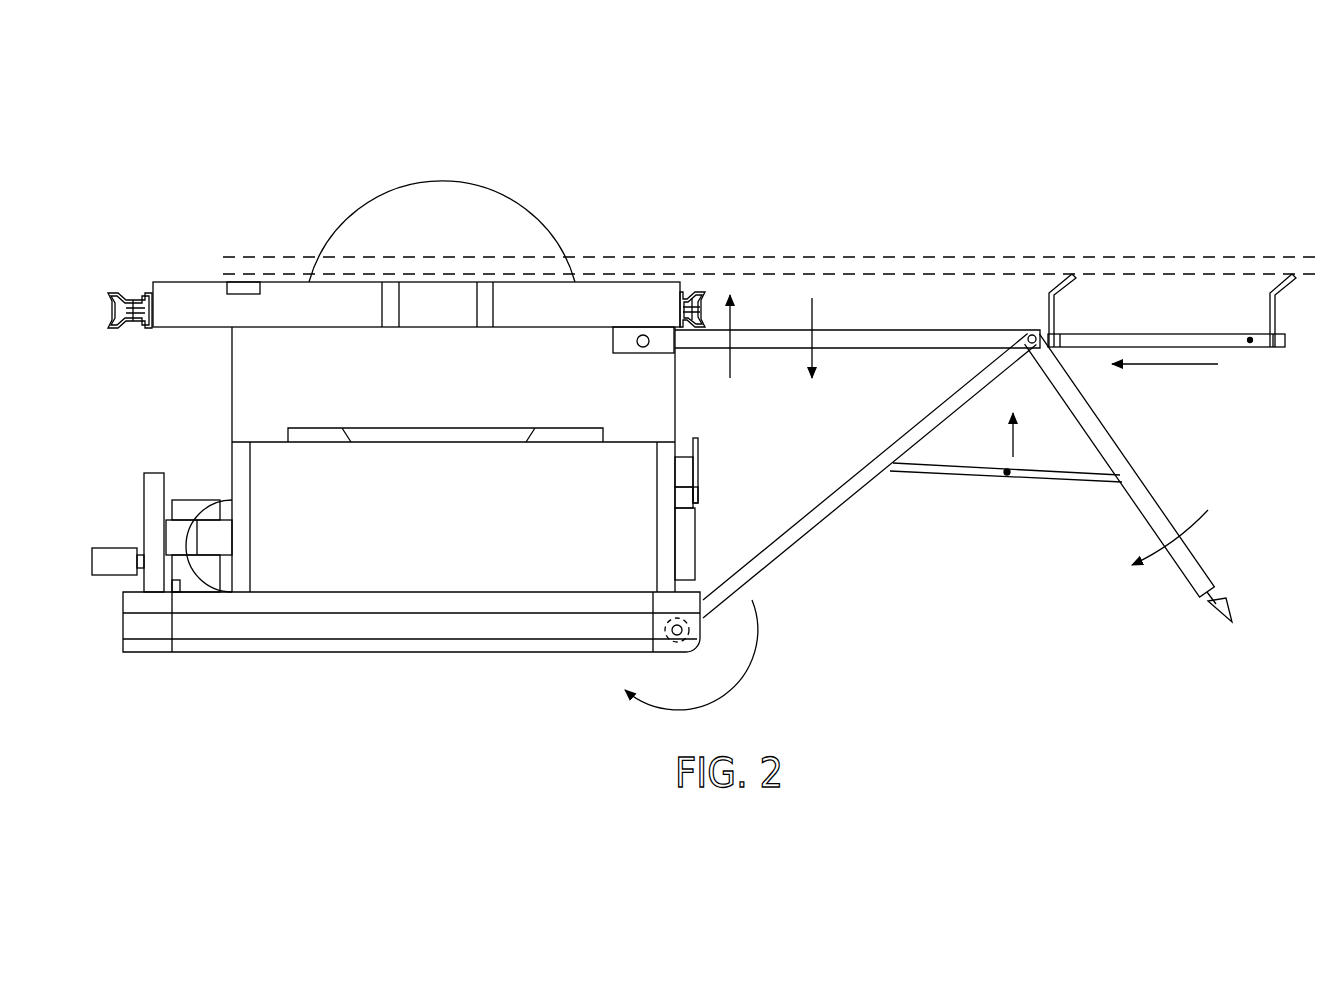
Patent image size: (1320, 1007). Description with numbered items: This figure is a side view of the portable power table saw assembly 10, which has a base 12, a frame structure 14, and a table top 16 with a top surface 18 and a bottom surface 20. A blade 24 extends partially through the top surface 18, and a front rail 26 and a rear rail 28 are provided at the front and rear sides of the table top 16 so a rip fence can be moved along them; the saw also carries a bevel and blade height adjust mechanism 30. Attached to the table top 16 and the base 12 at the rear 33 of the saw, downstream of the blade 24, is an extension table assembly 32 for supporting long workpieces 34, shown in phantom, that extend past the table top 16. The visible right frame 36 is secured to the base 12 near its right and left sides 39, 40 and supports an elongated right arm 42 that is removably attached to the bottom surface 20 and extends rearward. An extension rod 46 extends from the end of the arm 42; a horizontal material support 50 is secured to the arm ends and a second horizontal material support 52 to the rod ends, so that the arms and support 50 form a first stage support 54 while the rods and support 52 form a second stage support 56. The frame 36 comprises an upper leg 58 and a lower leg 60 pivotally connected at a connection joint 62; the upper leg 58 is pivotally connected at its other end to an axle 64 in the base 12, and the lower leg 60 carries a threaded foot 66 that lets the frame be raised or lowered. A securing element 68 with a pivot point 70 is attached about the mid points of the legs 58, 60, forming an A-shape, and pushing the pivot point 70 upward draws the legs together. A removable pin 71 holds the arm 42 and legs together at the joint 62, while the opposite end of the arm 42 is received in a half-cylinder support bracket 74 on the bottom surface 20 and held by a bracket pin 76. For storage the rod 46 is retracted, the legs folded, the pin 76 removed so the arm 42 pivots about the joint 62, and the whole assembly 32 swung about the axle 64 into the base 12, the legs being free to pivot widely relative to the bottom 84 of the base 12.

The power table saw assembly 10 is at (851, 120).
The base 12 is at (360, 628).
The frame structure 14 is at (312, 548).
The table top 16 is at (197, 305).
The top surface 18 is at (186, 281).
The bottom surface 20 is at (565, 328).
The blade 24 is at (490, 190).
The front rail 26 is at (135, 292).
The rear rail 28 is at (706, 298).
The bevel and blade height adjust mechanism 30 is at (142, 492).
The extension table assembly 32 is at (976, 312).
The rear 33 is at (720, 442).
The workpieces 34 is at (791, 256).
The right frame 36 is at (1125, 452).
The right side 39 is at (544, 628).
The left side 40 is at (700, 628).
The right arm 42 is at (850, 330).
The extension rod 46 is at (1112, 332).
The horizontal material support 50 is at (1058, 290).
The horizontal material support 52 is at (1278, 290).
The first stage support 54 is at (936, 312).
The second stage support 56 is at (1199, 310).
The upper leg 58 is at (842, 512).
The lower leg 60 is at (1140, 512).
The connection joint 62 is at (1020, 330).
The axle 64 is at (676, 642).
The foot 66 is at (1237, 615).
The securing element 68 is at (958, 470).
The pivot point 70 is at (1007, 478).
The removable pin 71 is at (1038, 360).
The support bracket 74 is at (626, 345).
The bracket pin 76 is at (645, 348).
The bottom 84 is at (598, 655).